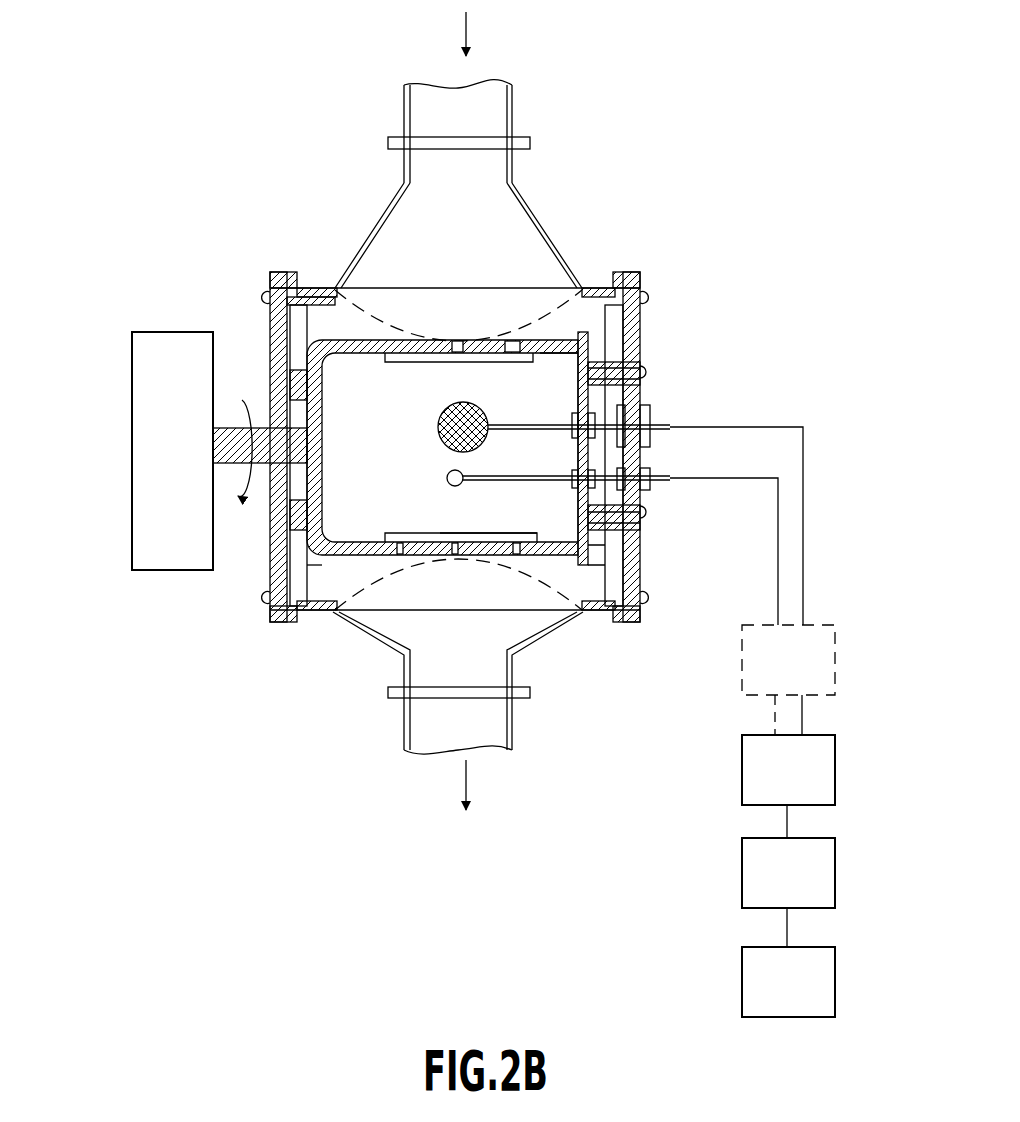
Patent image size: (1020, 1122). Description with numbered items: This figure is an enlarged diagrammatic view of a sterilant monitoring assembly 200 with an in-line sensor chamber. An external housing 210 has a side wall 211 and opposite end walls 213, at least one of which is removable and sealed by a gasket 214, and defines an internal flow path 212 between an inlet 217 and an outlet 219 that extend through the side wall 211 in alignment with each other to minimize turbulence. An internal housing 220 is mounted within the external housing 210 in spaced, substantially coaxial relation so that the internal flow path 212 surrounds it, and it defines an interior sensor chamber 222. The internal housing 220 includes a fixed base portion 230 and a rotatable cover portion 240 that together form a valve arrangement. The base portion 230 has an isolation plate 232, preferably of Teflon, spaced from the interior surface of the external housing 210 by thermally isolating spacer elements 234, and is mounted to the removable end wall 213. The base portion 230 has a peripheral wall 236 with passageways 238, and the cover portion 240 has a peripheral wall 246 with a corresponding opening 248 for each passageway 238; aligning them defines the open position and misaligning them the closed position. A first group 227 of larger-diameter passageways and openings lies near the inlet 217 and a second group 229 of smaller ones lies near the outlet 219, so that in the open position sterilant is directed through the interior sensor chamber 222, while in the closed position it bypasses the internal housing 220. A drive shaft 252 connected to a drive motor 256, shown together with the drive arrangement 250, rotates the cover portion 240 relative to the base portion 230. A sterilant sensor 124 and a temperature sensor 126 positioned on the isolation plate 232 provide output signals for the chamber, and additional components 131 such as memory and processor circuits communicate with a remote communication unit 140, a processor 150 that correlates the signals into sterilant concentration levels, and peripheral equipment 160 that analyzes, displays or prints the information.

The sterilant monitoring assembly 200 is at (678, 143).
The external housing 210 is at (559, 637).
The side wall 211 is at (325, 286).
The internal flow path 212 is at (350, 336).
The end walls 213 is at (642, 320).
The gasket 214 is at (271, 278).
The inlet 217 is at (392, 208).
The outlet 219 is at (408, 640).
The internal housing 220 is at (581, 590).
The interior sensor chamber 222 is at (390, 504).
The first group 227 is at (470, 364).
The second group 229 is at (470, 533).
The base portion 230 is at (602, 552).
The isolation plate 232 is at (642, 508).
The spacer elements 234 is at (612, 362).
The peripheral wall 236 is at (555, 355).
The passageway 238 is at (452, 540).
The cover portion 240 is at (330, 575).
The peripheral wall 246 is at (530, 325).
The opening 248 is at (512, 562).
The sterilant sensor 124 is at (437, 424).
The temperature sensor 126 is at (448, 476).
The additional components 131 is at (838, 657).
The remote communication unit 140 is at (835, 770).
The processor 150 is at (835, 878).
The peripheral equipment 160 is at (835, 983).
The drive assembly 250 is at (122, 529).
The drive shaft 252 is at (220, 428).
The drive motor 256 is at (138, 380).